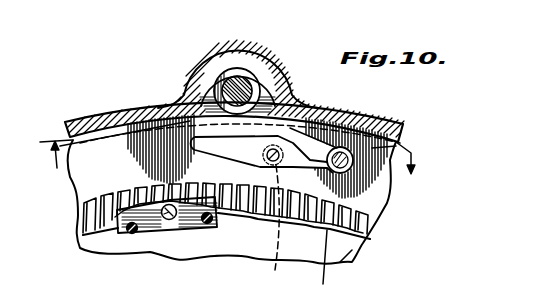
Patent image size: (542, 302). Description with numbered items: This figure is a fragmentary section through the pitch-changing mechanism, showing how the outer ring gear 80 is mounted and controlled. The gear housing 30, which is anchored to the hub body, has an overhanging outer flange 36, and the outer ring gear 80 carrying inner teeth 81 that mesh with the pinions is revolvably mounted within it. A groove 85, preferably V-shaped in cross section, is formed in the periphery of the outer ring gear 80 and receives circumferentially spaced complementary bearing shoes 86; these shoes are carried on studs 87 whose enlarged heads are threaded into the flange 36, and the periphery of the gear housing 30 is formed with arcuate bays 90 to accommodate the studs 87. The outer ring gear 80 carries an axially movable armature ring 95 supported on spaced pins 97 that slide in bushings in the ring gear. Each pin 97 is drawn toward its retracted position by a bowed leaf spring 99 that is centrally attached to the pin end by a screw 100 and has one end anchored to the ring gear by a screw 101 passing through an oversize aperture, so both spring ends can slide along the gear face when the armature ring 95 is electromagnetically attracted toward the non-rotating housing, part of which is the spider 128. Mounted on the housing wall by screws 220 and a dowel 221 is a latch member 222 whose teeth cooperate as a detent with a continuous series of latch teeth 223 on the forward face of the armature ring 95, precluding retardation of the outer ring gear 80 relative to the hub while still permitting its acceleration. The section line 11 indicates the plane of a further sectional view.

The section line 11— 11 is at (236, 157).
The gear housing 30 is at (97, 113).
The outer flange 36 is at (152, 104).
The outer ring gear 80 is at (103, 172).
The inner teeth 81 is at (368, 230).
The groove 85 is at (392, 124).
The bearing shoes 86 is at (259, 76).
The studs 87 is at (220, 88).
The arcuate bays 90 is at (238, 41).
The outer armature ring 95 is at (248, 219).
The pins 97 is at (278, 228).
The leaf springs 99 is at (350, 128).
The screw 100 is at (276, 145).
The screw 101 is at (375, 170).
The spider 128 is at (350, 248).
The screws 220 is at (131, 234).
The dowel 221 is at (169, 220).
The latch member 222 is at (117, 236).
The latch teeth 223 is at (327, 266).